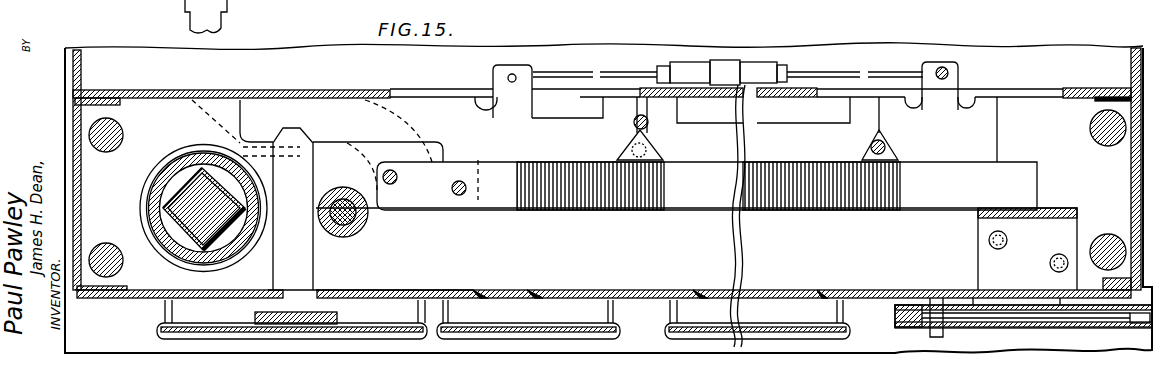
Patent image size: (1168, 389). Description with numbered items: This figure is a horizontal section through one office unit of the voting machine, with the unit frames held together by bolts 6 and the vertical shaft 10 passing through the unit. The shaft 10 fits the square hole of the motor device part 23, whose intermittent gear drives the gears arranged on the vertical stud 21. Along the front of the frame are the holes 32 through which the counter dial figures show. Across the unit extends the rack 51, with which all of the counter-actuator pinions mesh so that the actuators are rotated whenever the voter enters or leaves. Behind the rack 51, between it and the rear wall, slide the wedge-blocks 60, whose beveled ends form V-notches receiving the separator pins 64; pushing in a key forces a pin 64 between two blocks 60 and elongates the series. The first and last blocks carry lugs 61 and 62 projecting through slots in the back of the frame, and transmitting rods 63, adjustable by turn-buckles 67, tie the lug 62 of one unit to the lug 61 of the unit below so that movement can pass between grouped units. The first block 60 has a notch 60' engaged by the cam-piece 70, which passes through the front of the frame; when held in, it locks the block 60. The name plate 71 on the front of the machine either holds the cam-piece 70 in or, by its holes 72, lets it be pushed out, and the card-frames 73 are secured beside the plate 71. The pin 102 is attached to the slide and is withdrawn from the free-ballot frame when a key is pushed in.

The bolt 6 is at (607, 193).
The shaft 10 is at (204, 209).
The vertical stud 21 is at (355, 212).
The motor device part 23 is at (237, 237).
The hole 32 is at (540, 290).
The rack 51 is at (707, 186).
The wedge-block 60 is at (688, 125).
The notch 60' is at (294, 121).
The lug 61 is at (497, 71).
The lug 62 is at (953, 69).
The transmitting rod 63 is at (618, 73).
The separator pin 64 is at (647, 124).
The turn-buckle 67 is at (727, 73).
The cam-piece 70 is at (293, 209).
The name plate 71 is at (327, 315).
The hole 72 is at (328, 290).
The card-frame 73 is at (523, 325).
The pin 102 is at (943, 336).